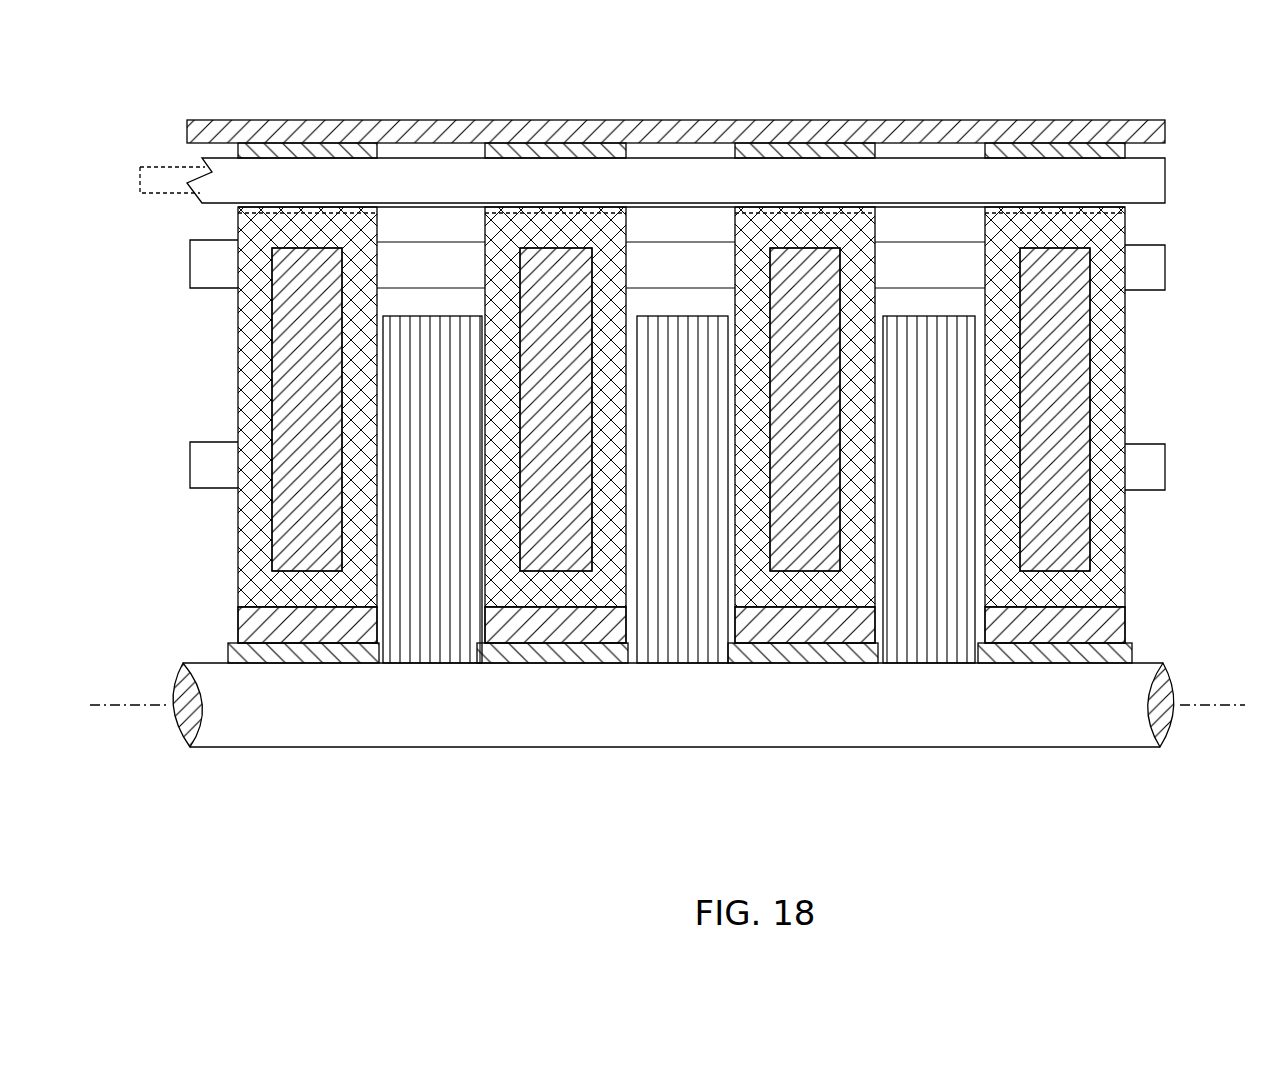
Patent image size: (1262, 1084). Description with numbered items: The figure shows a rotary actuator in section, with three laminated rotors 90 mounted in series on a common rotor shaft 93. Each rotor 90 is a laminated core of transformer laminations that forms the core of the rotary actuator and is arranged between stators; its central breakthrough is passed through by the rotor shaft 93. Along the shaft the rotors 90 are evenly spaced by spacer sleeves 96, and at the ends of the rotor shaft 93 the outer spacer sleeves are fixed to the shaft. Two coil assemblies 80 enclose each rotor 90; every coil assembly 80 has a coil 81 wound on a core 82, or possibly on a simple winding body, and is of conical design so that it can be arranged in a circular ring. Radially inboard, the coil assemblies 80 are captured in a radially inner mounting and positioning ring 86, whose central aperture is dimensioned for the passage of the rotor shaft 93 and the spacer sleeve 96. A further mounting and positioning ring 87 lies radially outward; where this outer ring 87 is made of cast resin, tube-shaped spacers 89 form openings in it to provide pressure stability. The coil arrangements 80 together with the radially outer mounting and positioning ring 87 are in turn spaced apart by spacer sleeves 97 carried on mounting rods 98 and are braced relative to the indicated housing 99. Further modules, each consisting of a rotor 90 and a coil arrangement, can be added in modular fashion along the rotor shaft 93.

The coil assembly 80 is at (1095, 516).
The coil 81 is at (1115, 375).
The core 82 is at (1075, 520).
The radially inner mounting and positioning ring 86 is at (577, 635).
The radially outer mounting and positioning ring 87 is at (510, 150).
The spacer 89 is at (338, 146).
The rotor 90 is at (683, 665).
The rotor shaft 93 is at (1105, 735).
The spacer sleeve 96 is at (555, 656).
The spacer sleeve 97 is at (937, 160).
The mounting rod 98 is at (168, 177).
The housing 99 is at (688, 128).